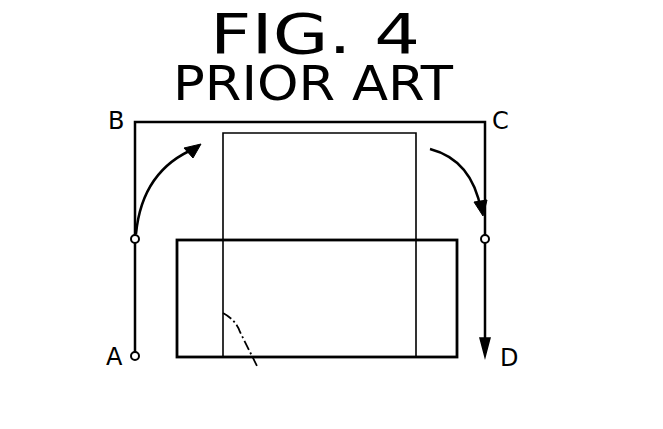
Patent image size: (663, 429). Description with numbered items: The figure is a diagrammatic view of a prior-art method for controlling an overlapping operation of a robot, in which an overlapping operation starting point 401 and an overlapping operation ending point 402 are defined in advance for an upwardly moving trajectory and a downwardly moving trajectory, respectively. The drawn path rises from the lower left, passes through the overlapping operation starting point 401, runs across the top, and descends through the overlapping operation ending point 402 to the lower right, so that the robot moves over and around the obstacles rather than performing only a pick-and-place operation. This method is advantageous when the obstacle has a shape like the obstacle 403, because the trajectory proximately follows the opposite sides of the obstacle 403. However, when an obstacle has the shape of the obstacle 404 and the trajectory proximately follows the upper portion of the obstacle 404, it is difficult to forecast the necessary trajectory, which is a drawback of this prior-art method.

The overlapping operation starting point 401 is at (131, 239).
The overlapping operation ending point 402 is at (489, 239).
The obstacle 403 is at (193, 359).
The obstacle 404 is at (262, 356).